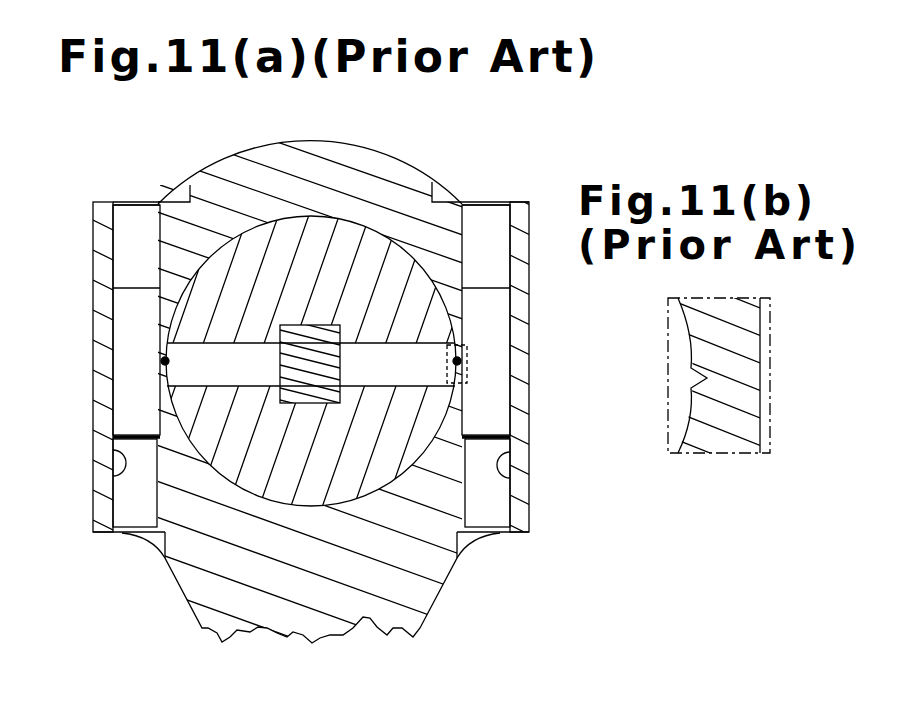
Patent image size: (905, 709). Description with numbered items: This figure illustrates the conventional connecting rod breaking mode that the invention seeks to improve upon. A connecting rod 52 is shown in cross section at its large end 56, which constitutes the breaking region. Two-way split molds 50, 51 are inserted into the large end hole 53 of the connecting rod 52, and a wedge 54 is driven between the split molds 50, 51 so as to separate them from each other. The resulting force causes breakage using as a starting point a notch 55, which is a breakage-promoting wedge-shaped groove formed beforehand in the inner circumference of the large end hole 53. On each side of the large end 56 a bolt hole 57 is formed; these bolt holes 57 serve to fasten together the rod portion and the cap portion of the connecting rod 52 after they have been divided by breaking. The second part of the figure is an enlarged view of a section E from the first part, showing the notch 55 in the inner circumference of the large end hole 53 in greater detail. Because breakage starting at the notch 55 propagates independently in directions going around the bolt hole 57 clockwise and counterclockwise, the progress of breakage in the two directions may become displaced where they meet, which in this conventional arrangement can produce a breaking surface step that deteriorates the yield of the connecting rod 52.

In FIG. 11A, the split mold 50 is at (438, 319).
In FIG. 11A, the split mold 51 is at (440, 410).
In FIG. 11A, the connecting rod 52 is at (86, 223).
In FIG. 11A, the large end hole 53 is at (406, 470).
In FIG. 11B, the large end hole 53 is at (690, 418).
In FIG. 11A, the wedge 54 is at (333, 366).
In FIG. 11A, the notch 55 is at (168, 361).
In FIG. 11B, the notch 55 is at (694, 376).
In FIG. 11A, the large end 56 is at (380, 170).
In FIG. 11A, the bolt hole 57 is at (110, 470).
In FIG. 11A, the section E is at (464, 361).